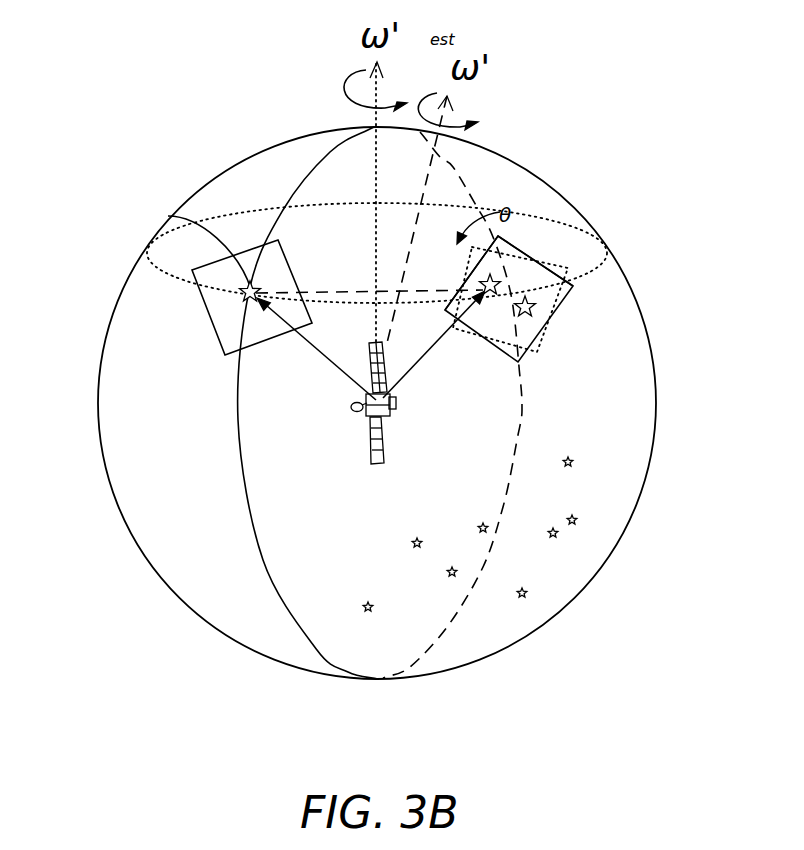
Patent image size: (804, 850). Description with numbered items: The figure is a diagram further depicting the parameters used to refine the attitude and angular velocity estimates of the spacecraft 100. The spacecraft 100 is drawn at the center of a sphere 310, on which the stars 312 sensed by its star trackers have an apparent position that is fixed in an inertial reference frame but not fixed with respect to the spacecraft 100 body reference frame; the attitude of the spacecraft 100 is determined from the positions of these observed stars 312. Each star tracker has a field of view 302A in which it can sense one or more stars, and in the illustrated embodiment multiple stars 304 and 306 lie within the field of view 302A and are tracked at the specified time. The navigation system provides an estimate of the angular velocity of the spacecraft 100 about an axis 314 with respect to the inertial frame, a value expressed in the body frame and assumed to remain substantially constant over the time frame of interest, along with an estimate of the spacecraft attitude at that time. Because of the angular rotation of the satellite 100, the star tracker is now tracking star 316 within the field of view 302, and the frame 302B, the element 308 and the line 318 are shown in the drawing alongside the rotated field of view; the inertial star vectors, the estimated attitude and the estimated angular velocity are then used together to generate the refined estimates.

The spacecraft 100 is at (382, 418).
The field of view 302 is at (199, 286).
The field of view 302A is at (524, 360).
The second (rotated) star tracker frame 302B is at (548, 348).
The star 304 is at (508, 230).
The star 306 is at (535, 306).
The tracked star 308 is at (503, 292).
The sphere 310 is at (633, 512).
The stars 312 is at (528, 600).
The axis 314 is at (423, 193).
The star 316 is at (170, 216).
The line of sight to star 318 is at (313, 352).